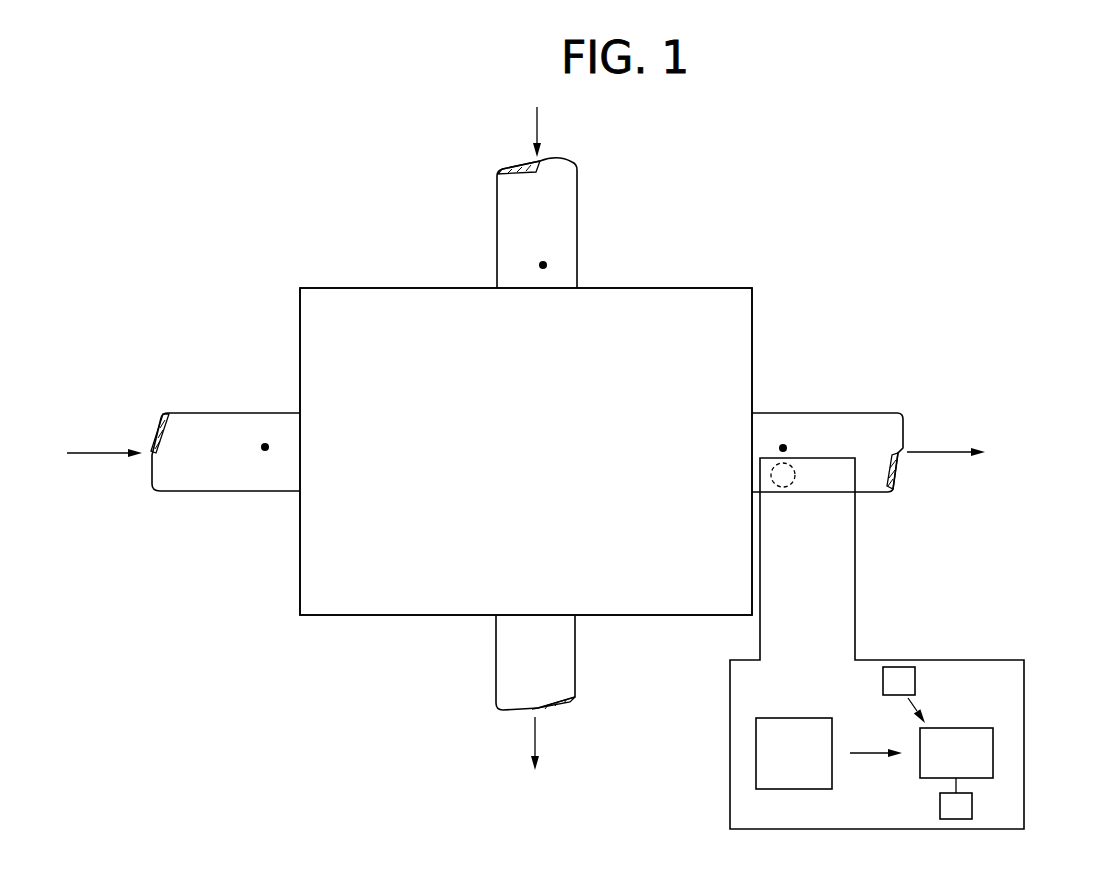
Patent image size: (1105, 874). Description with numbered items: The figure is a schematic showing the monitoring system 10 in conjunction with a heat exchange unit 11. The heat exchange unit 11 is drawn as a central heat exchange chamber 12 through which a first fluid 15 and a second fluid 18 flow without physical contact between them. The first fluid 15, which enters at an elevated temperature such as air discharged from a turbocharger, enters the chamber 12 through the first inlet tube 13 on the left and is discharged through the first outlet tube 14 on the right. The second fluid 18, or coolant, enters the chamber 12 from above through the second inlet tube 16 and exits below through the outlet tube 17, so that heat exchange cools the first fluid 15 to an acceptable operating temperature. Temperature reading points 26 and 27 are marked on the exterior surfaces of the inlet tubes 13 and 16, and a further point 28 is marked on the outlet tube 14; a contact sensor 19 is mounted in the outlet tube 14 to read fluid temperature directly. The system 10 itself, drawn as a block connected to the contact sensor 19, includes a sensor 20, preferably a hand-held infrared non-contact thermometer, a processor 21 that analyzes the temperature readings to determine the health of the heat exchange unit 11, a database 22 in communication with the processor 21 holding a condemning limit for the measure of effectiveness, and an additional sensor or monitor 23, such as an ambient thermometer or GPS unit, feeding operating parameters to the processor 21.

The system 10 is at (900, 660).
The heat exchange unit 11 is at (757, 248).
The heat exchange chamber 12 is at (345, 617).
The first inlet tube 13 is at (193, 413).
The first outlet tube 14 is at (873, 413).
The first fluid 15 is at (95, 452).
The second inlet tube 16 is at (497, 212).
The outlet tube 17 is at (575, 657).
The second fluid 18 is at (537, 127).
The contact sensor 19 is at (795, 476).
The sensor 20 is at (797, 718).
The processor 21 is at (955, 728).
The database 22 is at (972, 805).
The additional sensor or monitor 23 is at (910, 680).
The temperature reading point 26 is at (265, 447).
The temperature reading point 27 is at (543, 265).
The temperature reading point 28 is at (783, 448).